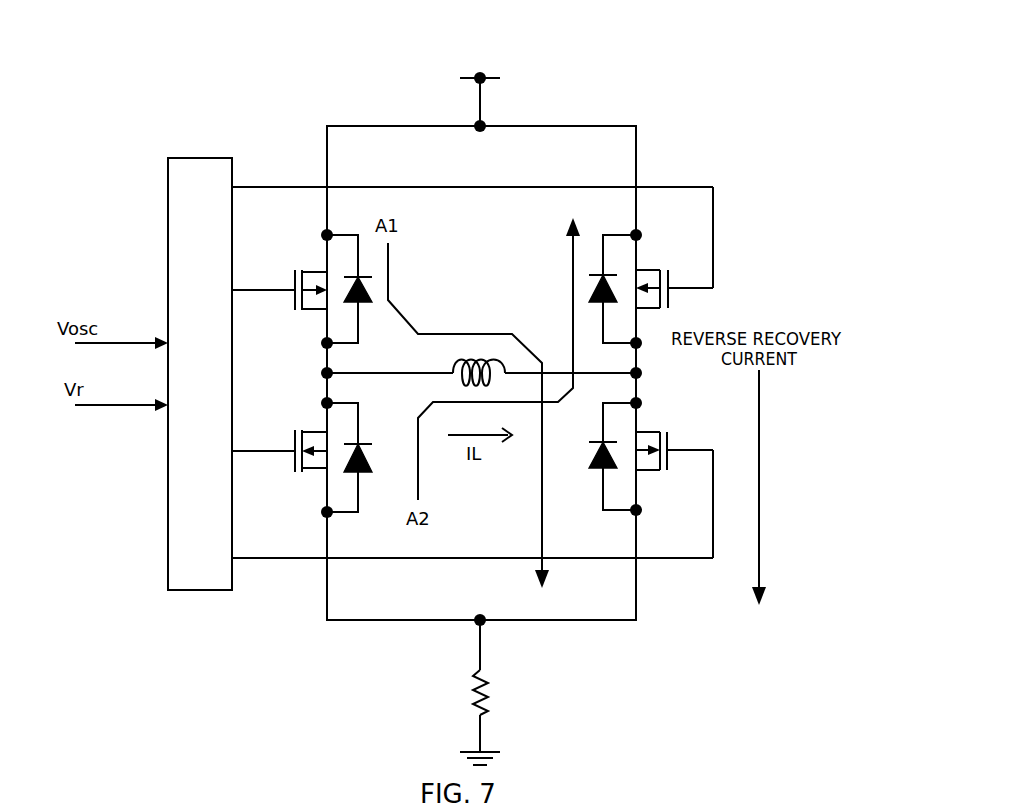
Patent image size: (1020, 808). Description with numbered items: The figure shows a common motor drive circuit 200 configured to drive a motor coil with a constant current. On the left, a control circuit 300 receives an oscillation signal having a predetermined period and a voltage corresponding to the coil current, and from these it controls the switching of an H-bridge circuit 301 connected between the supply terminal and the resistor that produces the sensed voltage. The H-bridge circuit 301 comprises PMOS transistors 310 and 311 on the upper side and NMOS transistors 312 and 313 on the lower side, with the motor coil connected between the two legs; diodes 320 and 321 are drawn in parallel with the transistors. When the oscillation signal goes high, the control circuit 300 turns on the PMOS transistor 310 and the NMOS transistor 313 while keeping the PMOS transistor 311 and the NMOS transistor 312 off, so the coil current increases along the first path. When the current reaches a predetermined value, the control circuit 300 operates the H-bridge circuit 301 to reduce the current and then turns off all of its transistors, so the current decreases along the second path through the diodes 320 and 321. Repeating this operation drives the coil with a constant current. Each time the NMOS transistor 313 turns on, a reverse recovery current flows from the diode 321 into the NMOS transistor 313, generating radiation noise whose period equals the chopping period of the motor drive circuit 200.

The motor drive circuit 200 is at (590, 70).
The control circuit 300 is at (168, 158).
The H-bridge circuit 301 is at (652, 168).
The PMOS transistor 310 is at (302, 310).
The PMOS transistor 311 is at (672, 296).
The NMOS transistor 312 is at (303, 474).
The NMOS transistor 313 is at (657, 472).
The diode 320 is at (365, 446).
The diode 321 is at (613, 275).